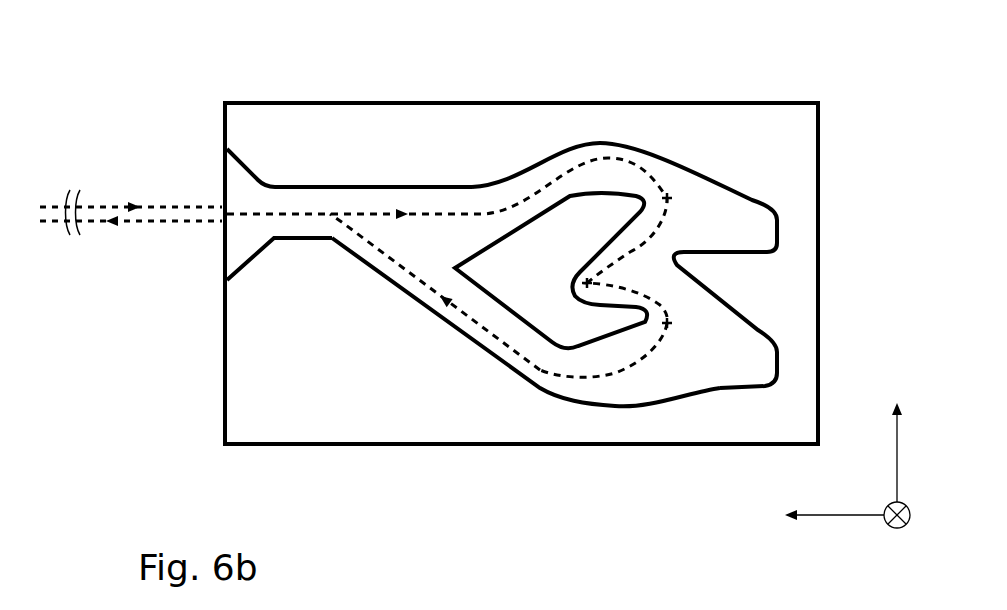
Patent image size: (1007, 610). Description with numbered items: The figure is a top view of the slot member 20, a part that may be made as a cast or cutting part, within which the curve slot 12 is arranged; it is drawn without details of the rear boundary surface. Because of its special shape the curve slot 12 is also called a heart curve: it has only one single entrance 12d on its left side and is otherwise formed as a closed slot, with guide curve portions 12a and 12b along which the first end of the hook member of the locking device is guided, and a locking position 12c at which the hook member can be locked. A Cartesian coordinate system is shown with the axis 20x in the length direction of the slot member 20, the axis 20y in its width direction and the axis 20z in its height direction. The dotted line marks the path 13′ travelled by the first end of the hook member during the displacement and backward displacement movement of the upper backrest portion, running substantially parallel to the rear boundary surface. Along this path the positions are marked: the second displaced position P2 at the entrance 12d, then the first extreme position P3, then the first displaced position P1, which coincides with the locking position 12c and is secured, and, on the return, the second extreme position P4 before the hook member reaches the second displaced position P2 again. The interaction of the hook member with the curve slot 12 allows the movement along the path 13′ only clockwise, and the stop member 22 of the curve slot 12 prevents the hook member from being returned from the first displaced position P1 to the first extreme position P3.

The curve slot 12 is at (330, 178).
The guide curve portion 12a is at (609, 150).
The guide curve portion 12b is at (421, 294).
The locking position 12c is at (588, 286).
The entrance 12d is at (214, 255).
The path 13′ is at (500, 339).
The slot member 20 is at (473, 125).
The axis 20x is at (897, 528).
The axis 20y is at (837, 515).
The axis 20z is at (897, 465).
The stop member 22 is at (744, 287).
The first displaced position P1 is at (588, 286).
The second displaced position P2 is at (222, 212).
The first extreme position P3 is at (668, 196).
The second extreme position P4 is at (667, 326).